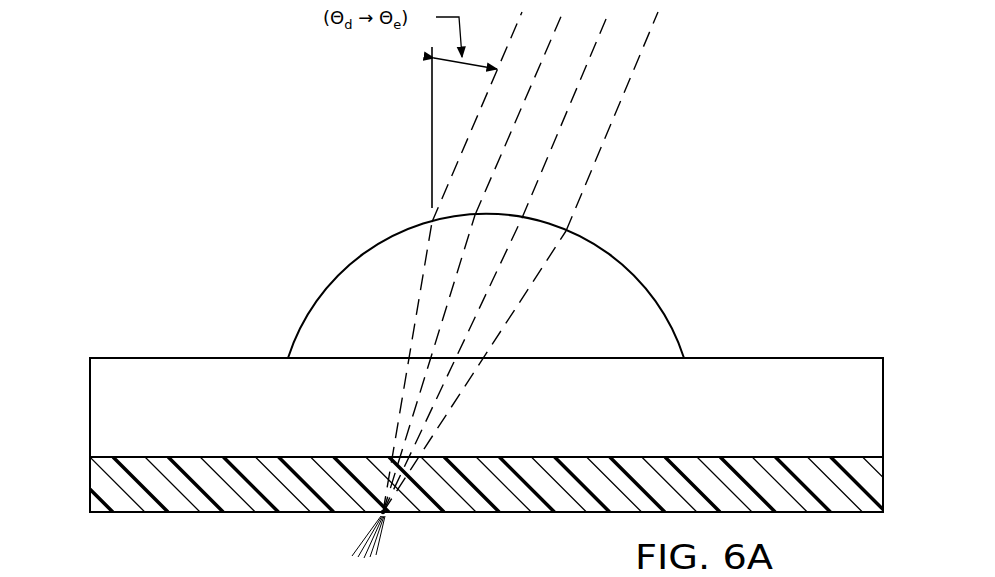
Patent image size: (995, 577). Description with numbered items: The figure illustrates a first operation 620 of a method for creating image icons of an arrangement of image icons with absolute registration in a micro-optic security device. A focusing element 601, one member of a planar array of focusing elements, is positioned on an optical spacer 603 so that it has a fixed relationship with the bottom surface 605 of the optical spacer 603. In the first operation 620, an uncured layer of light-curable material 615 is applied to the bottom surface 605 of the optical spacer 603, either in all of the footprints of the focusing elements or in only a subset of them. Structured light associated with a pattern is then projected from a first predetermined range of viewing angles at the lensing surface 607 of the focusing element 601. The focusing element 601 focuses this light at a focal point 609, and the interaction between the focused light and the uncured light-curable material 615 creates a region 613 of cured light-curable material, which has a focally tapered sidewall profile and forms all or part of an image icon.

The first operation 620 is at (269, 73).
The focusing element 601 is at (640, 278).
The lensing surface 607 is at (378, 244).
The optical spacer 603 is at (97, 407).
The bottom surface 605 is at (575, 457).
The light-curable material 615 is at (98, 486).
The region of cured light-curable material 613 is at (366, 490).
The focal point 609 is at (393, 526).